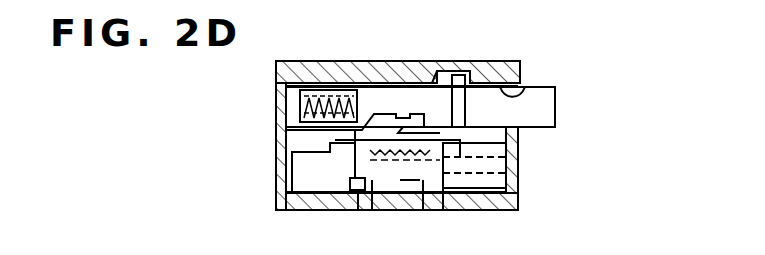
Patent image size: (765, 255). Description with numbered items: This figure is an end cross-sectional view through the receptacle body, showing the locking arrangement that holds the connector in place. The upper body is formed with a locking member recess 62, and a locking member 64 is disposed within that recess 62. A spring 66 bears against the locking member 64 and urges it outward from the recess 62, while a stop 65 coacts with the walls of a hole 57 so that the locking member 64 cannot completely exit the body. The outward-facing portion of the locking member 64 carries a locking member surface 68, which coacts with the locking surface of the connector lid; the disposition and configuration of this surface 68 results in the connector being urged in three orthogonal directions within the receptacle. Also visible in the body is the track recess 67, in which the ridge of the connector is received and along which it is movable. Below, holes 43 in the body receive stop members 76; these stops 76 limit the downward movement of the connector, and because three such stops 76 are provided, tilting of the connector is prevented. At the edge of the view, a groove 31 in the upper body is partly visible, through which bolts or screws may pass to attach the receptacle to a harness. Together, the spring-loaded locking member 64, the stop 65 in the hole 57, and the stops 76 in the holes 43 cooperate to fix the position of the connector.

The holes 43 is at (347, 199).
The hole 57 is at (438, 80).
The locking member recess 62 is at (525, 87).
The locking member 64 is at (557, 104).
The stop 65 is at (460, 76).
The spring 66 is at (298, 109).
The track recess 67 is at (503, 133).
The locking member surface 68 is at (350, 130).
The stop members 76 is at (367, 200).
The grooves 31 is at (194, 251).